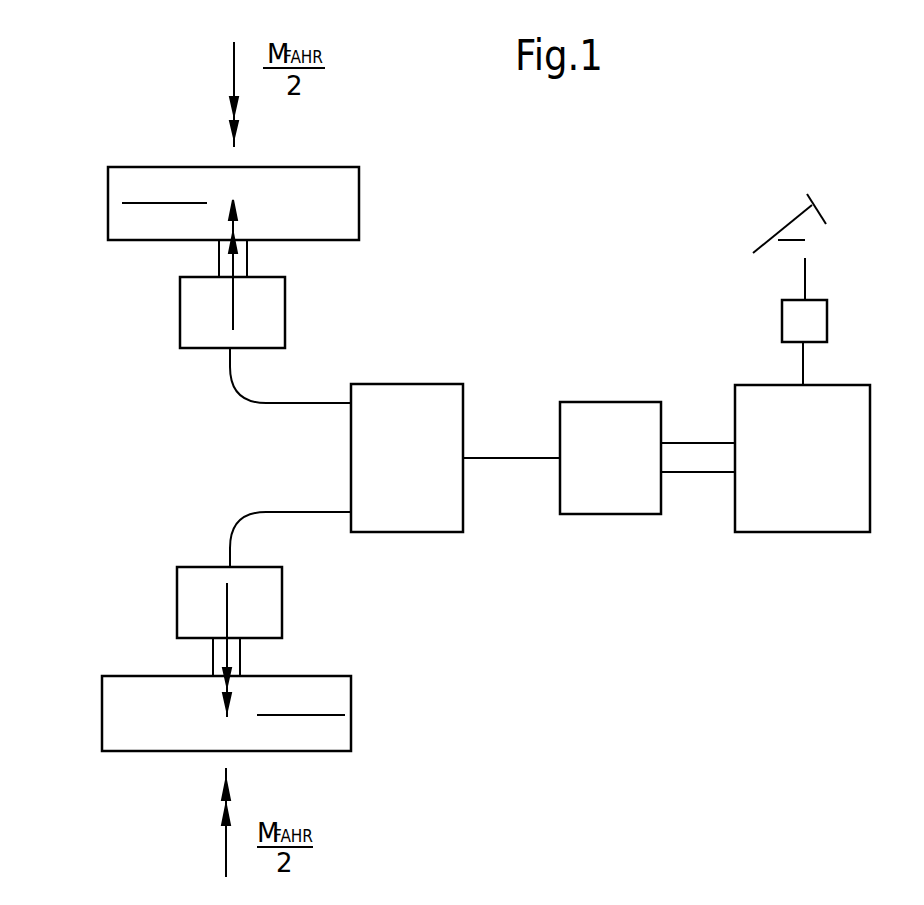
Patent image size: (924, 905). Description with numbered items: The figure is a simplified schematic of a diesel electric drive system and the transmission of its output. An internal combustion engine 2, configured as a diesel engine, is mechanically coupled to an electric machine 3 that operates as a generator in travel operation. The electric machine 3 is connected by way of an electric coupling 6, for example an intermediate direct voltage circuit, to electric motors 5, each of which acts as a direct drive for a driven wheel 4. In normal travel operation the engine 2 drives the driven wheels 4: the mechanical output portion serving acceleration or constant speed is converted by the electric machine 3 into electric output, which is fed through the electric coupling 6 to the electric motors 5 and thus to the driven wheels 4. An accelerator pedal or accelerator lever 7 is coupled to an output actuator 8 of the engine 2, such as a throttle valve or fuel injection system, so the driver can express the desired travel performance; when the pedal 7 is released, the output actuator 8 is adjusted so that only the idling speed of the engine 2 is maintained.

The internal combustion engine 2 is at (814, 467).
The electric machine 3 is at (621, 467).
The driven wheel 4 is at (332, 219).
The electric motor 5 is at (270, 315).
The electric coupling 6 is at (420, 469).
The accelerator pedal or accelerator lever 7 is at (812, 197).
The output actuator 8 is at (813, 322).